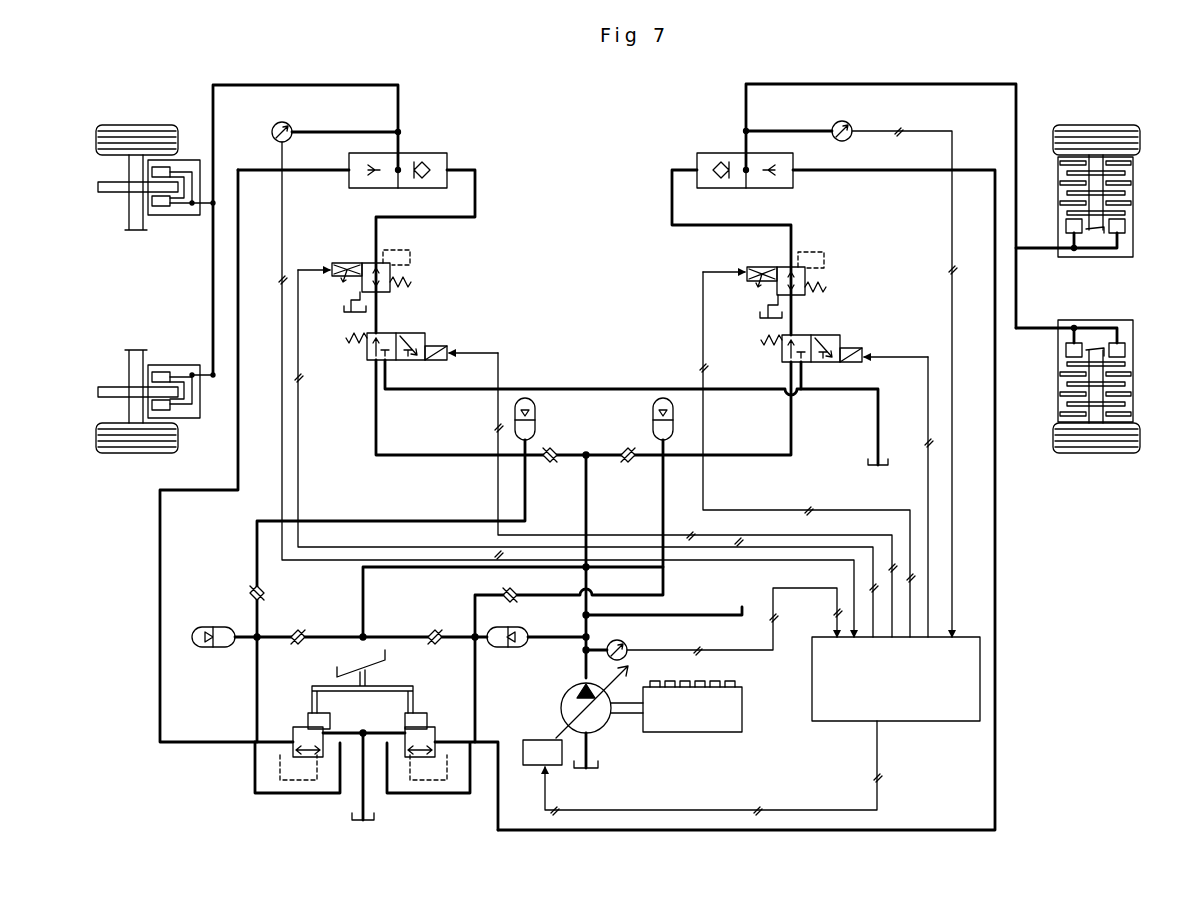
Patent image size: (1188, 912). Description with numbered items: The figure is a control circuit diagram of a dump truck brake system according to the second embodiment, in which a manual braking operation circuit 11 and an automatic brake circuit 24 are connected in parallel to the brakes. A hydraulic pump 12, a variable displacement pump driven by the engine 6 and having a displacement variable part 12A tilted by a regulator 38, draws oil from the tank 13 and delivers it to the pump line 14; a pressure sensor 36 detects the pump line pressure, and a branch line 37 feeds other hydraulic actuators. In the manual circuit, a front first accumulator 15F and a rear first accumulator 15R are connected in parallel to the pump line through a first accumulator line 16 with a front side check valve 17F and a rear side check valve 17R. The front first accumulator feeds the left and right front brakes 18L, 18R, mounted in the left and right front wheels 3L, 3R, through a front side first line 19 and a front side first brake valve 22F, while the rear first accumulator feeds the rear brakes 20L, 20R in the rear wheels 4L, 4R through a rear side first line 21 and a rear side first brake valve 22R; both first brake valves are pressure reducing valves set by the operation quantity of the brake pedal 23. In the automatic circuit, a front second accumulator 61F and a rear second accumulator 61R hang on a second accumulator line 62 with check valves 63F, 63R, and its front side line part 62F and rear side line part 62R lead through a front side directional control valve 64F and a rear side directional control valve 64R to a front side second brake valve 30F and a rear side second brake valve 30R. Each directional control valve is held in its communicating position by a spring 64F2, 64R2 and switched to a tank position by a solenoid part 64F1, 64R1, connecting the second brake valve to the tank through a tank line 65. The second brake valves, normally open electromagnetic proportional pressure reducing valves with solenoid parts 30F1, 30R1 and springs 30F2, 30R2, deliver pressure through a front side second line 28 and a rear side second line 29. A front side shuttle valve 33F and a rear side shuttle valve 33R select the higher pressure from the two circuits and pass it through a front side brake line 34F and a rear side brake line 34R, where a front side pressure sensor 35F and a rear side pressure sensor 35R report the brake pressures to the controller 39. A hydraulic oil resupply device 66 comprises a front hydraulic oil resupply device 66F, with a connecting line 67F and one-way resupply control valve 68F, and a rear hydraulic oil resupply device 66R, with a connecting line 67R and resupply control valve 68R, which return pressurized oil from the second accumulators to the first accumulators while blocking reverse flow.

The right front wheel 3R is at (148, 125).
The left front wheel 3L is at (138, 453).
The right rear wheel 4R is at (1096, 125).
The left rear wheel 4L is at (1095, 453).
The engine 6 is at (743, 712).
The manual braking operation circuit 11 is at (420, 800).
The hydraulic pump 12 is at (565, 692).
The displacement variable part 12A is at (540, 740).
The tank 13 is at (344, 308).
The pump line 14 is at (590, 585).
The front first accumulator 15F is at (215, 648).
The rear first accumulator 15R is at (508, 648).
The first accumulator line 16 is at (345, 632).
The front side check valve 17F is at (298, 630).
The rear side check valve 17R is at (428, 635).
The right side front brake 18R is at (175, 215).
The left side front brake 18L is at (175, 365).
The front side first line 19 is at (160, 668).
The right side rear brake 20R is at (1105, 258).
The left side rear brake 20L is at (1110, 320).
The rear side first line 21 is at (997, 605).
The front side first brake valve 22F is at (302, 727).
The rear side first brake valve 22R is at (428, 727).
The brake pedal 23 is at (350, 670).
The automatic brake circuit 24 is at (578, 340).
The front side second line 28 is at (478, 198).
The rear side second line 29 is at (793, 235).
The front side second brake valve 30F is at (375, 252).
The electromagnetic proportional solenoid part 30F1 is at (333, 263).
The spring 30F2 is at (411, 282).
The rear side second brake valve 30R is at (808, 290).
The electromagnetic proportional solenoid part 30R1 is at (747, 268).
The spring 30R2 is at (826, 287).
The front side shuttle valve 33F is at (445, 153).
The rear side shuttle valve 33R is at (712, 153).
The front side brake line 34F is at (398, 92).
The rear side brake line 34R is at (960, 84).
The front side pressure sensor 35F is at (272, 127).
The rear side pressure sensor 35R is at (833, 125).
The pressure sensor 36 is at (618, 640).
The branch line 37 is at (700, 616).
The regulator 38 is at (533, 767).
The controller 39 is at (812, 680).
The front second accumulator 61F is at (538, 415).
The rear second accumulator 61R is at (652, 430).
The second accumulator line 62 is at (590, 462).
The front side line part 62F is at (378, 425).
The rear side line part 62R is at (793, 425).
The check valve 63F is at (553, 465).
The check valve 63R is at (628, 465).
The front side directional control valve 64F is at (392, 333).
The solenoid part 64F1 is at (447, 350).
The spring 64F2 is at (350, 345).
The rear side directional control valve 64R is at (815, 335).
The solenoid part 64R1 is at (862, 357).
The spring 64R2 is at (762, 340).
The tank line 65 is at (620, 389).
The hydraulic oil resupply device 66 is at (355, 519).
The front hydraulic oil resupply device 66F is at (255, 548).
The rear hydraulic oil resupply device 66R is at (668, 587).
The connecting line 67F is at (257, 521).
The connecting line 67R is at (476, 568).
The resupply control valve 68F is at (250, 593).
The resupply control valve 68R is at (513, 600).